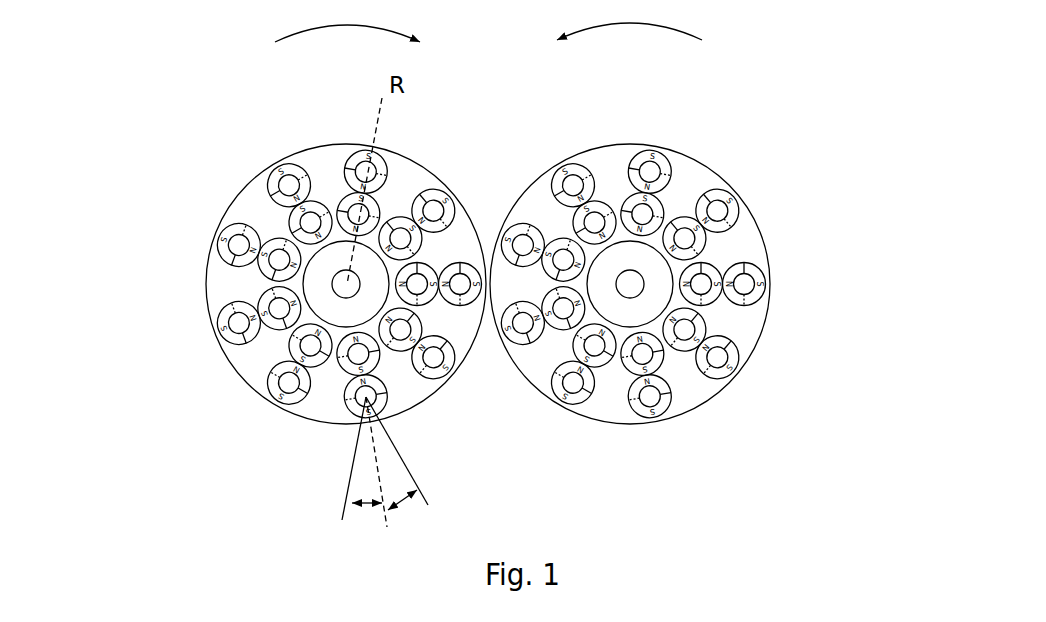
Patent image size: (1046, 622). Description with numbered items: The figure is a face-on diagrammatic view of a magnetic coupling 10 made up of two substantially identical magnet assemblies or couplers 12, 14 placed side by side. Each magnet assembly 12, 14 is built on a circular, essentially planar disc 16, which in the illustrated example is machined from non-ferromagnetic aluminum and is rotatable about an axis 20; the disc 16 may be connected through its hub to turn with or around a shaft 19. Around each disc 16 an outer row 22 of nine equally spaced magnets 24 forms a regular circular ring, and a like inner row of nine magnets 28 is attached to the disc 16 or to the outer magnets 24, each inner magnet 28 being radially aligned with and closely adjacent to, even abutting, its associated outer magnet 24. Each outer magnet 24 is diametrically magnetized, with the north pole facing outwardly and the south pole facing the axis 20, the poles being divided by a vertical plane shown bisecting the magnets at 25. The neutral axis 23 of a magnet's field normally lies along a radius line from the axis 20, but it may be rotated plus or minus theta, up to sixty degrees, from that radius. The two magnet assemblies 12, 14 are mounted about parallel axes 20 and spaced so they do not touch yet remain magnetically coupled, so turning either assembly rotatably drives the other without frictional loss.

The magnetic coupling 10 is at (452, 339).
The magnet assembly 12 is at (210, 207).
The magnet assembly 14 is at (676, 284).
The disc 16 is at (263, 217).
The shaft 19 is at (488, 202).
The axis 20 is at (525, 282).
The outer row 22 is at (215, 243).
The neutral axis 23 is at (375, 501).
The magnet 24 is at (263, 388).
The vertical plane 25 is at (505, 296).
The magnet 28 is at (483, 279).